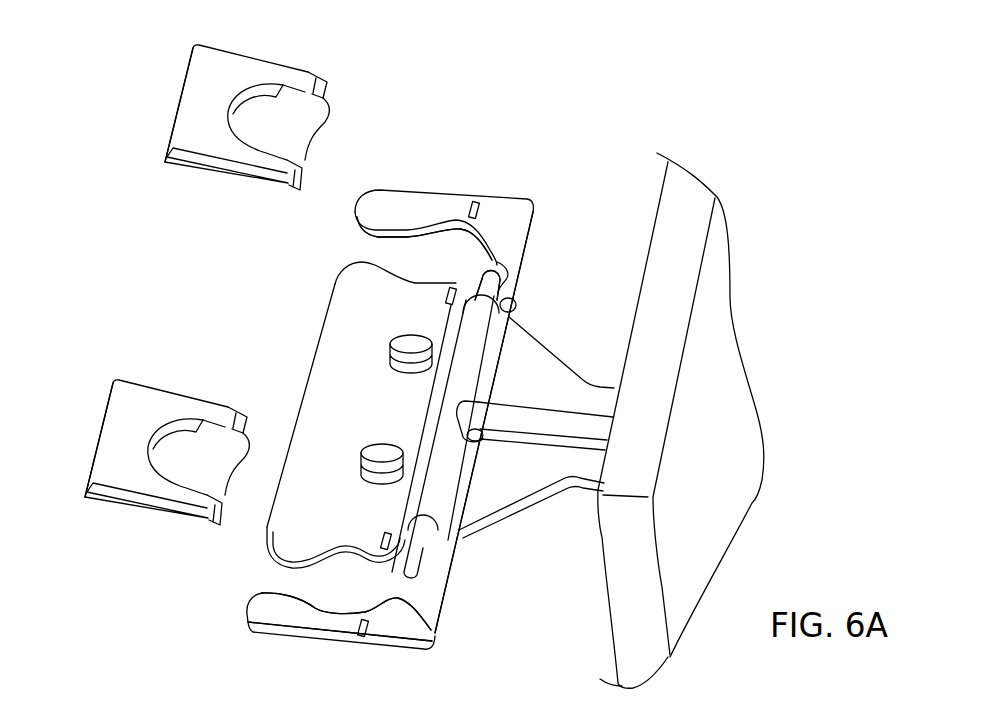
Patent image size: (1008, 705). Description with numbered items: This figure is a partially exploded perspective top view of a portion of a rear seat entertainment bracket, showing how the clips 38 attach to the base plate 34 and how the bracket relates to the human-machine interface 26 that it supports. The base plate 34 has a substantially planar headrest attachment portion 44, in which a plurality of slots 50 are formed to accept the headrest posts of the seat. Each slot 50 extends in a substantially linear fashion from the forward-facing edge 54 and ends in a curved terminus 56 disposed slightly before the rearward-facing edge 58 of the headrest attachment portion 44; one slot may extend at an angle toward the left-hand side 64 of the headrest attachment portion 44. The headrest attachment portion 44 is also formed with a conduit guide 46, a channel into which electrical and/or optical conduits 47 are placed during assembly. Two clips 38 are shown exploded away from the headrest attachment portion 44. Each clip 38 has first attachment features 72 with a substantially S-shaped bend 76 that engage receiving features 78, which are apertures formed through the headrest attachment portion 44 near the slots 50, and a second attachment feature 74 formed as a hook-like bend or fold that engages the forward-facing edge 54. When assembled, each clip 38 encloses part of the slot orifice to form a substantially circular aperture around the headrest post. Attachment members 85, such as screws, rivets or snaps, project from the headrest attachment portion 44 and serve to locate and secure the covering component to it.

The human-machine interface (HMI) 26 is at (765, 303).
The base plate 34 is at (184, 284).
The clips 38 is at (227, 70).
The headrest attachment portion 44 is at (345, 307).
The conduit guide 46 is at (545, 418).
The electrical and/or optical conduits 47 is at (516, 303).
The slots 50 is at (423, 244).
The forward-facing edge 54 is at (265, 533).
The curved terminus 56 is at (492, 242).
The rearward-facing edge 58 is at (446, 582).
The left-hand side 64 is at (282, 636).
The first attachment features 72 is at (326, 94).
The second attachment feature 74 is at (172, 127).
The S-shaped bend 76 is at (338, 130).
The receiving features 78 is at (473, 202).
The attachment members 85 is at (400, 344).